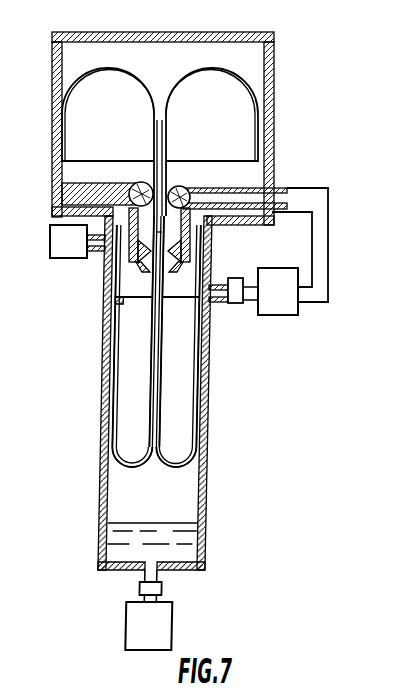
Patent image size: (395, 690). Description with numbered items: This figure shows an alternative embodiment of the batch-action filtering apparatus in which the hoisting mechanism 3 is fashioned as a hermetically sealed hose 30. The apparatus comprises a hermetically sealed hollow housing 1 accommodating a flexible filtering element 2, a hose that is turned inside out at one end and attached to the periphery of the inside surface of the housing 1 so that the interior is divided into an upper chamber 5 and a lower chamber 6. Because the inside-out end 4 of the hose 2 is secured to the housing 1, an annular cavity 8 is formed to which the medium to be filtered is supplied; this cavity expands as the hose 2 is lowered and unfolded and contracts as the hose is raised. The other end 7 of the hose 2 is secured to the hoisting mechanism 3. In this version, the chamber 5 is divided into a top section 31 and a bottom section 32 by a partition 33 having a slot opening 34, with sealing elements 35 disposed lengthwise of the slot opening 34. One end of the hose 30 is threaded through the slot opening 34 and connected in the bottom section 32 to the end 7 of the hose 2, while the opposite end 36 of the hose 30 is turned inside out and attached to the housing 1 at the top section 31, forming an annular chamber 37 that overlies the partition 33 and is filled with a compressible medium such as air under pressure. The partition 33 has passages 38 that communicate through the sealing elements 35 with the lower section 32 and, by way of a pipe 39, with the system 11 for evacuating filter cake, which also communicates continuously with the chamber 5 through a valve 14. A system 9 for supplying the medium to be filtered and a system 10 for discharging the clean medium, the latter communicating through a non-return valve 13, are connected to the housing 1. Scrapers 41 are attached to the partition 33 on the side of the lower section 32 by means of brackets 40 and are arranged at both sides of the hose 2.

The housing 1 is at (53, 98).
The flexible filtering element 2 is at (151, 318).
The hoisting mechanism 3 is at (262, 138).
The end of the hose 4 is at (107, 300).
The upper chamber 5 is at (256, 182).
The lower chamber 6 is at (190, 492).
The other end of the hose 7 is at (180, 262).
The annular cavity 8 is at (203, 340).
The system for supplying the medium to be filtered 9 is at (58, 246).
The system for discharging the clean medium 10 is at (144, 619).
The system for evacuating filter cake 11 is at (288, 306).
The non-return valve 13 is at (171, 588).
The valve 14 is at (237, 302).
The hermetically sealed hose 30 is at (167, 121).
The top section 31 is at (62, 164).
The bottom section 32 is at (55, 209).
The partition 33 is at (53, 191).
The slot opening 34 is at (150, 184).
The sealing elements 35 is at (182, 178).
The opposite end of the hose 36 is at (77, 83).
The annular chamber 37 is at (127, 83).
The passages 38 is at (272, 205).
The pipe 39 is at (329, 248).
The brackets 40 is at (186, 244).
The scrapers 41 is at (136, 273).